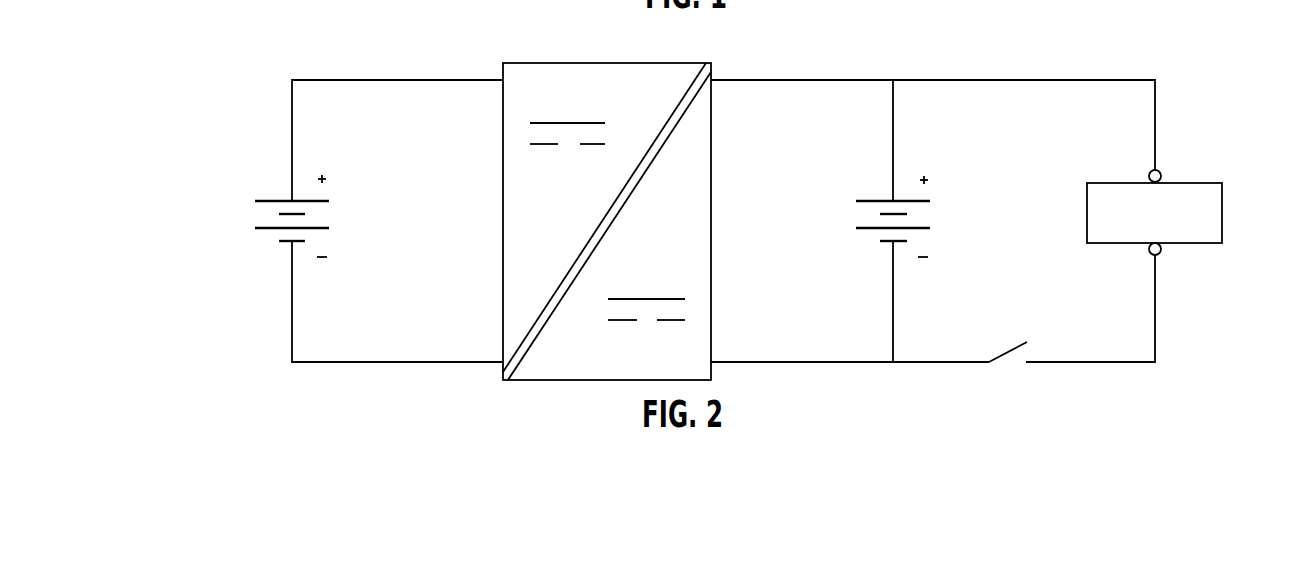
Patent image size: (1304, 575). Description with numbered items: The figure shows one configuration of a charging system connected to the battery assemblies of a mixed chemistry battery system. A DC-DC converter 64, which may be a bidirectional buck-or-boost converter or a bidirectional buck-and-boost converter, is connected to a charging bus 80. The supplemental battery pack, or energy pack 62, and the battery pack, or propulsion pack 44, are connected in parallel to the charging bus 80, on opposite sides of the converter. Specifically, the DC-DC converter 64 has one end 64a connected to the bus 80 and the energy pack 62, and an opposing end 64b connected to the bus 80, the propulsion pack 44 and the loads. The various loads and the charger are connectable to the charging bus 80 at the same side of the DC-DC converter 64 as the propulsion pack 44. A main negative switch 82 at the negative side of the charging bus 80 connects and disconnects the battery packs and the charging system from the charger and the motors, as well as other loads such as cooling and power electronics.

The charging bus 80 is at (418, 363).
The supplemental battery pack 62 is at (273, 229).
The DC-DC converter 64 is at (652, 87).
The end of DC-DC converter 64a is at (503, 147).
The opposing end of DC-DC converter 64b is at (711, 312).
The battery pack 44 is at (918, 229).
The main negative switch 82 is at (1006, 348).